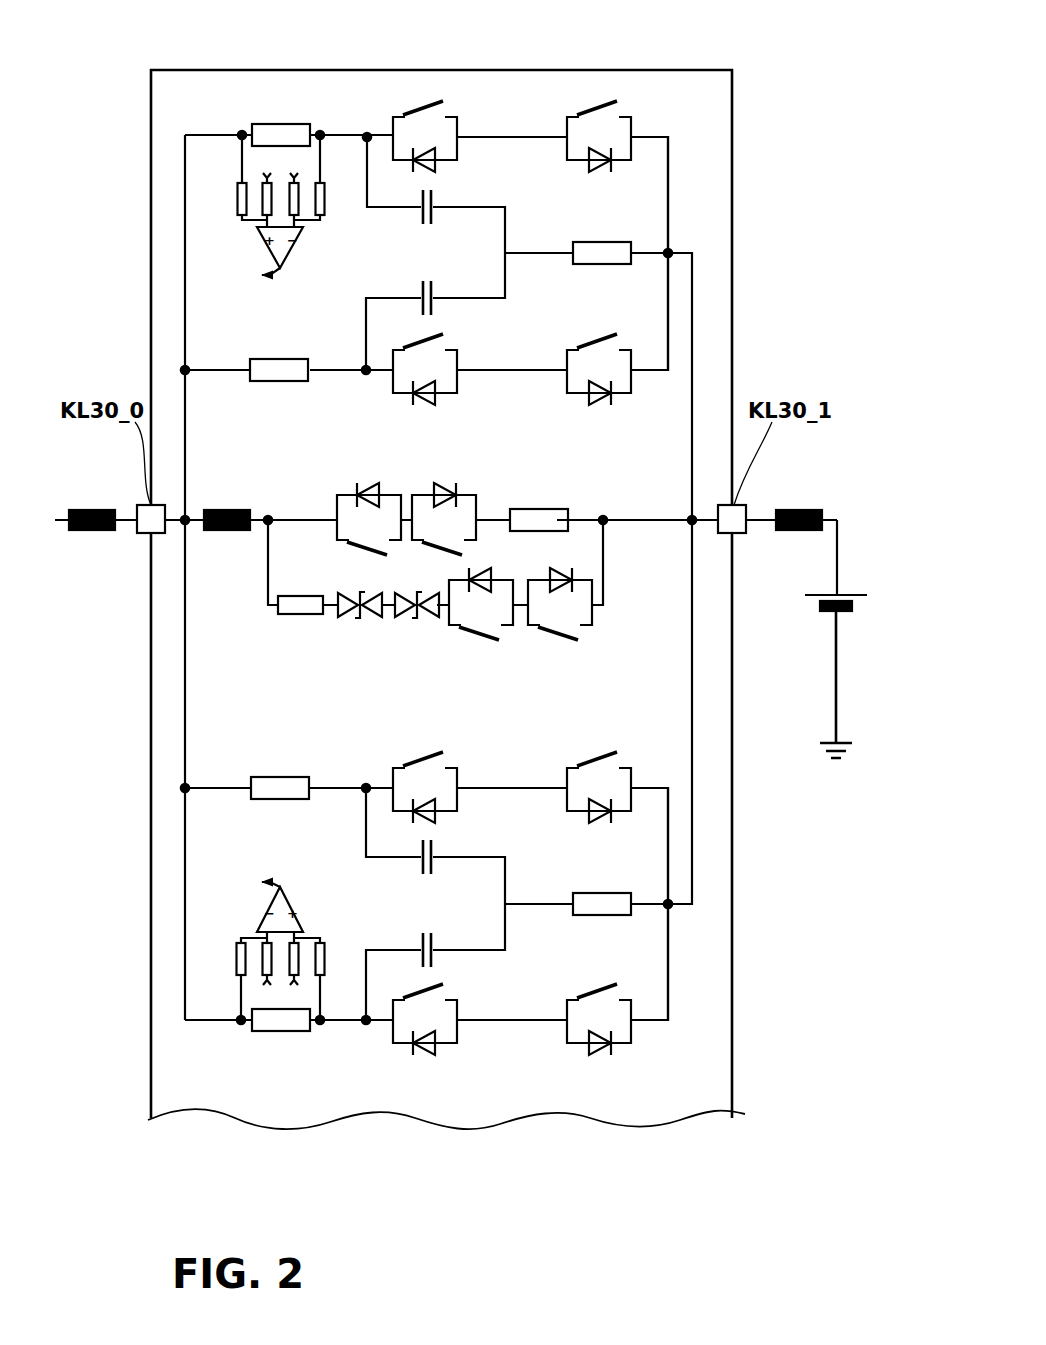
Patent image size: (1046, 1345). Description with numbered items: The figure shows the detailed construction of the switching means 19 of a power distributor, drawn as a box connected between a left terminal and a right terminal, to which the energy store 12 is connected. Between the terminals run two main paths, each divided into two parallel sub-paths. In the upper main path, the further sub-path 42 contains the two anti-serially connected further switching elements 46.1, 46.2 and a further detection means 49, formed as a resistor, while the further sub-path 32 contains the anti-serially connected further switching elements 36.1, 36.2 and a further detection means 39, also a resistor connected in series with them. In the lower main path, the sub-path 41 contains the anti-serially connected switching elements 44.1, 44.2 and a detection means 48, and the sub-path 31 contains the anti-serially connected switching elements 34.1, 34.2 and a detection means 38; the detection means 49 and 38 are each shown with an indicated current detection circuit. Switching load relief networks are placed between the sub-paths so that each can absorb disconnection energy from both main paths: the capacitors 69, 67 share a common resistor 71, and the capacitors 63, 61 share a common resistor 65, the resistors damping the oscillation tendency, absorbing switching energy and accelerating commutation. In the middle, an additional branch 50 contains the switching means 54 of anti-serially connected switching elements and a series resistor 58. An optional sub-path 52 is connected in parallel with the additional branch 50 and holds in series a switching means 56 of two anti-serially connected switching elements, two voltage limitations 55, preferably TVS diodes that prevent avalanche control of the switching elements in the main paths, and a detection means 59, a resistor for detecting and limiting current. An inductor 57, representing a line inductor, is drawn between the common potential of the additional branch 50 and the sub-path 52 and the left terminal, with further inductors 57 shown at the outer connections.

The switching means 19 is at (733, 125).
The energy store 12 is at (805, 640).
The inductor 57 is at (93, 510).
The further detection means 49 is at (280, 130).
The further detection means 39 is at (262, 368).
The detection means 48 is at (275, 786).
The detection means 38 is at (280, 1030).
The further switching element 46.1 is at (415, 100).
The further switching element 46.2 is at (605, 100).
The further sub-path 42 is at (668, 135).
The further switching element 36.1 is at (423, 395).
The further switching element 36.2 is at (590, 397).
The further sub-path 32 is at (668, 360).
The capacitor 69 is at (421, 214).
The capacitor 67 is at (421, 294).
The resistor 71 is at (600, 250).
The switching element 44.1 is at (385, 773).
The switching element 44.2 is at (560, 775).
The sub-path 41 is at (653, 786).
The switching element 34.1 is at (407, 1060).
The switching element 34.2 is at (580, 1060).
The sub-path 31 is at (668, 960).
The capacitor 63 is at (421, 863).
The capacitor 61 is at (421, 946).
The resistor 65 is at (600, 916).
The additional branch 50 is at (299, 512).
The switching means 54 is at (348, 480).
The series resistor 58 is at (536, 512).
The optional sub-path 52 is at (266, 562).
The detection means 59 is at (298, 616).
The voltage limitation 55 is at (408, 625).
The switching means 56 is at (523, 643).